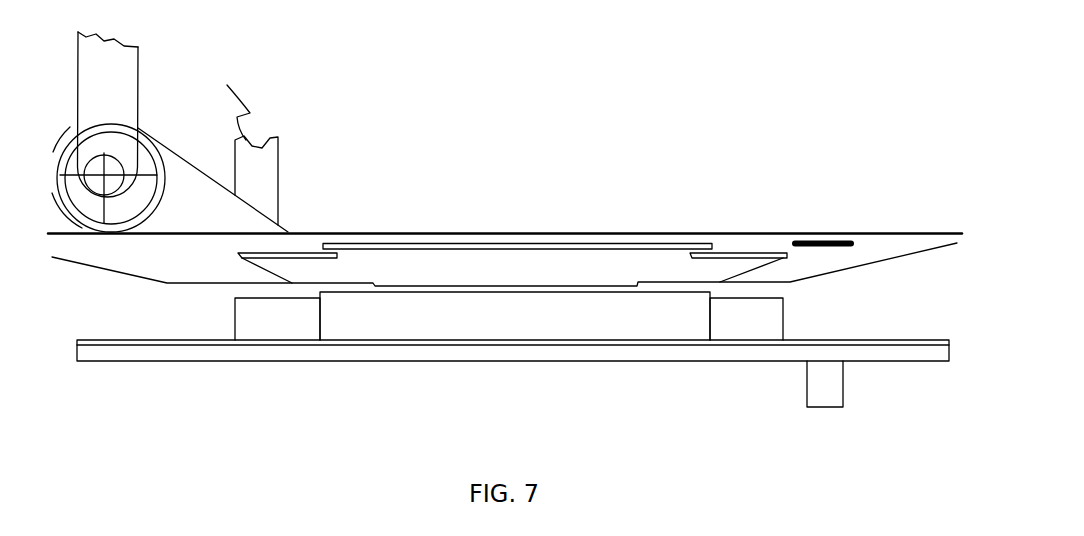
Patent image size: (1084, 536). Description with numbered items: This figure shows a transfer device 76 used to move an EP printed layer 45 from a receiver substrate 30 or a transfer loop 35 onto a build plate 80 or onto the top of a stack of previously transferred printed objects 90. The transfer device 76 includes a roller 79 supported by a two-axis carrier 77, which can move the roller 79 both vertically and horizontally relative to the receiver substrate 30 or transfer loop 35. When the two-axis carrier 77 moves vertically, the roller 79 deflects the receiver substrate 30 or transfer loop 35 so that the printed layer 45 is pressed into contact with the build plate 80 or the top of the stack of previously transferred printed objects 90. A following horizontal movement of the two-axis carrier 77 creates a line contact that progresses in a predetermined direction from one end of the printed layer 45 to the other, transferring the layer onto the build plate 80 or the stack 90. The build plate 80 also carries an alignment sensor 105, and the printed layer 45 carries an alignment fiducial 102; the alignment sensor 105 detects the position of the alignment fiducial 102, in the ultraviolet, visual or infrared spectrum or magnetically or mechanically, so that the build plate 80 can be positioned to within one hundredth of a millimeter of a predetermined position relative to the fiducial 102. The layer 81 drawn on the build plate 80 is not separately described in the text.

The receiver substrate 30 is at (105, 245).
The transfer loop 35 is at (430, 281).
The EP printed layer 45 is at (272, 268).
The transfer device 76 is at (296, 90).
The two-axis carrier 77 is at (118, 105).
The roller 79 is at (147, 153).
The build plate 80 is at (348, 352).
The base plate top surface 81 is at (213, 343).
The stack of previously transferred printed objects 90 is at (780, 320).
The alignment fiducial 102 is at (836, 247).
The alignment sensor 105 is at (837, 385).